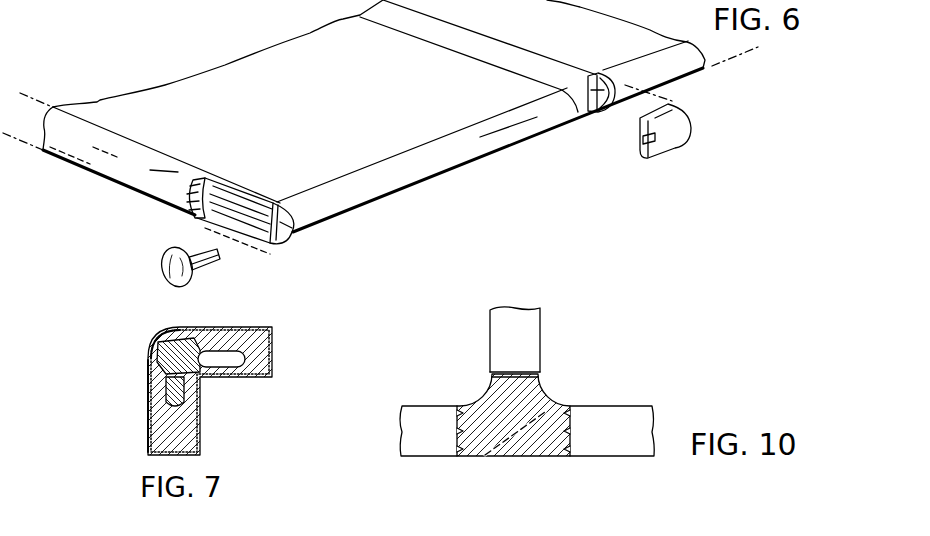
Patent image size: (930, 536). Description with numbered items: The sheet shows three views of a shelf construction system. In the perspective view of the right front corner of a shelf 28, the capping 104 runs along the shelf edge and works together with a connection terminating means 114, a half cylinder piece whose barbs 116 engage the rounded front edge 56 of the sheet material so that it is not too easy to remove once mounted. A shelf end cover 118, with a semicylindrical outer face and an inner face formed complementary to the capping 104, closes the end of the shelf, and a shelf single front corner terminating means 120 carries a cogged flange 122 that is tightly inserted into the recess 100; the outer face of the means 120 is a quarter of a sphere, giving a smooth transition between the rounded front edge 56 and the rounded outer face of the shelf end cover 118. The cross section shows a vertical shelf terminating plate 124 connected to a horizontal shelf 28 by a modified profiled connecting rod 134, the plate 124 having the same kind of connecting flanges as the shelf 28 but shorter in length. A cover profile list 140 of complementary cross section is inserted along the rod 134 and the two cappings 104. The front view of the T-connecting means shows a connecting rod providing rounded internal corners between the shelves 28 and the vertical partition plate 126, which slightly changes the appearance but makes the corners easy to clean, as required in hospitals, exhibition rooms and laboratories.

In FIG. 7, the shelf 28 is at (243, 328).
In FIG. 10, the shelf 28 is at (410, 415).
In FIG. 6, the front edge 56 is at (497, 127).
In FIG. 6, the recess 100 is at (297, 243).
In FIG. 6, the capping 104 is at (237, 195).
In FIG. 7, the capping 104 is at (198, 384).
In FIG. 10, the capping 104 is at (462, 405).
In FIG. 6, the connection terminating means 114 is at (690, 127).
In FIG. 6, the barbs 116 is at (640, 144).
In FIG. 6, the shelf end cover 118 is at (180, 193).
In FIG. 6, the shelf single front corner terminating means 120 is at (193, 287).
In FIG. 6, the cogged flange 122 is at (217, 258).
In FIG. 7, the vertical shelf terminating plate 124 is at (152, 417).
In FIG. 10, the vertical partition plate 126 is at (540, 334).
In FIG. 7, the modified profiled connecting rod 134 is at (157, 360).
In FIG. 10, the modified profiled connecting rod 134 is at (550, 446).
In FIG. 7, the cover profile list 140 is at (160, 337).